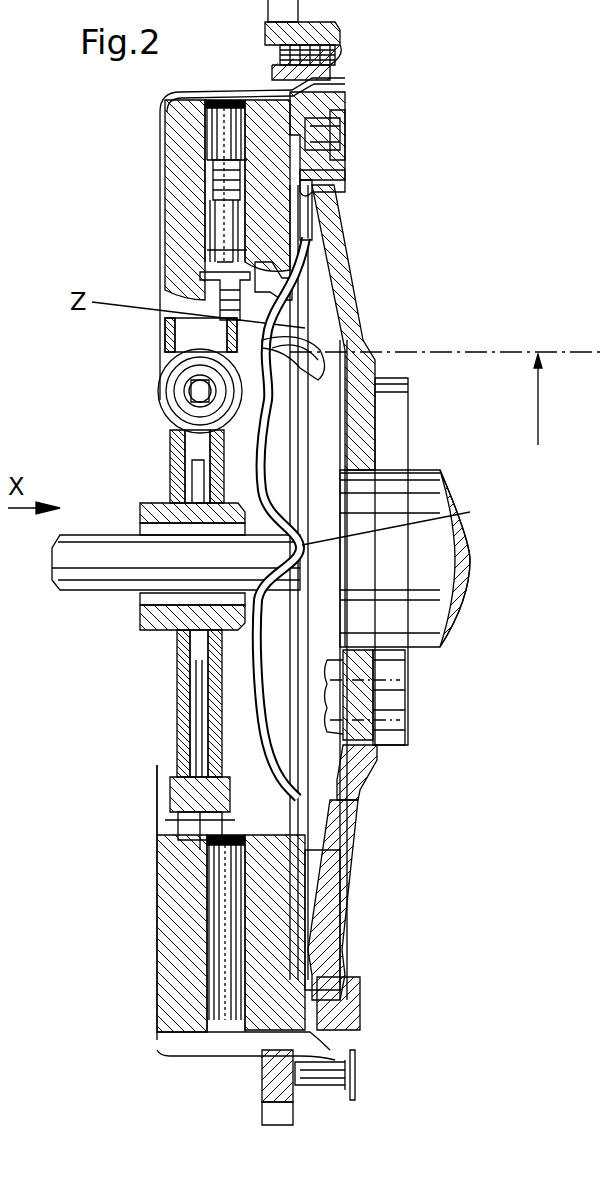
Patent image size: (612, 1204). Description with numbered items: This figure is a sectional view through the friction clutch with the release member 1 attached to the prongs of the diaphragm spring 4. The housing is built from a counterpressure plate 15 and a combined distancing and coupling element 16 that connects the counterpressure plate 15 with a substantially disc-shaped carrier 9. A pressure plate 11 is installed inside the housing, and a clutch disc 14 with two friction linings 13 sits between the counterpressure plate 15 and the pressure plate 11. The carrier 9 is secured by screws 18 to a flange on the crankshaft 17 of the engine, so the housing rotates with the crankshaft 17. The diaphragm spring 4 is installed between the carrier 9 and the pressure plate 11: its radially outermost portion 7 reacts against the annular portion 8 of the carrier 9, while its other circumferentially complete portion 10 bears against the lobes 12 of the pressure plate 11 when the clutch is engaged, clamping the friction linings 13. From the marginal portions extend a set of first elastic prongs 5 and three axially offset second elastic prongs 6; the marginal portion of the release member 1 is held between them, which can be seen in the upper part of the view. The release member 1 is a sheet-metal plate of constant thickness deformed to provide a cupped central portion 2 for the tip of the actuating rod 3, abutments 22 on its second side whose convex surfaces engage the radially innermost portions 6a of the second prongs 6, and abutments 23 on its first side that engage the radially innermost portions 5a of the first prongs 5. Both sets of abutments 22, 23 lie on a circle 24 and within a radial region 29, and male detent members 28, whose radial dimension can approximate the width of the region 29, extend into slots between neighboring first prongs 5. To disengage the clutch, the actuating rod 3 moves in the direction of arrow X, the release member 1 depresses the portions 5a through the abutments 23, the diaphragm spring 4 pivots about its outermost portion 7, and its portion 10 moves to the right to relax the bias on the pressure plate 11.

The release member 1 is at (408, 424).
The cupped central portion 2 is at (470, 512).
The actuating rod 3 is at (96, 576).
The diaphragm spring 4 is at (308, 240).
The first elastic prongs 5 is at (336, 320).
The radially innermost portions of the first prongs 5a is at (307, 369).
The second elastic prongs 6 is at (205, 300).
The radially innermost portion of the second prong 6a is at (216, 330).
The radially outermost portion of the diaphragm spring 7 is at (340, 182).
The annular portion of the carrier 8 is at (340, 170).
The carrier 9 is at (354, 346).
The circumferentially complete portion of the diaphragm spring 10 is at (320, 248).
The pressure plate 11 is at (246, 246).
The lobes of the pressure plate 12 is at (250, 256).
The friction linings 13 is at (236, 95).
The clutch disc 14 is at (176, 336).
The counterpressure plate 15 is at (176, 138).
The combined distancing and coupling element 16 is at (196, 90).
The crankshaft 17 is at (430, 622).
The screws 18 is at (356, 702).
The abutments 22 is at (242, 372).
The abutments 23 is at (172, 443).
The circle 24 is at (552, 399).
The male detent members 28 is at (306, 768).
The region 29 is at (310, 768).